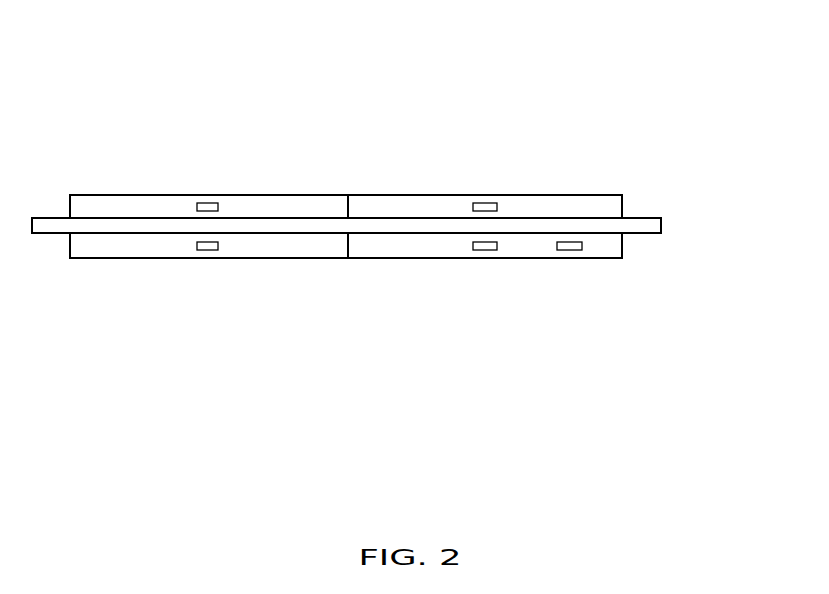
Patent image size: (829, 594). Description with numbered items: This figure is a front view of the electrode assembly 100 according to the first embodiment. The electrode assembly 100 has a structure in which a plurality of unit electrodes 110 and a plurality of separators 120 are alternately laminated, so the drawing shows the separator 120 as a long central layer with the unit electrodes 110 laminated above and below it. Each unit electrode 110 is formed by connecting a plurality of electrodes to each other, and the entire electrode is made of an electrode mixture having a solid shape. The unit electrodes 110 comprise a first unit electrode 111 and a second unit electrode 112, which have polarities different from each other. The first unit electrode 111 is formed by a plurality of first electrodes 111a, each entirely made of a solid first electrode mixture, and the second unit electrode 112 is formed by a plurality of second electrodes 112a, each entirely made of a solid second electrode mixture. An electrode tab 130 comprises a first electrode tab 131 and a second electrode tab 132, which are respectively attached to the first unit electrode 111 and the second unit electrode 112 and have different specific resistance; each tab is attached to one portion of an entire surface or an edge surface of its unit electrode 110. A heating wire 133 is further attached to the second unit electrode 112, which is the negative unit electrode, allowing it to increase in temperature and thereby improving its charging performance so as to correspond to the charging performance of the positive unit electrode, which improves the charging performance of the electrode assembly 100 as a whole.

The electrode assembly 100 is at (125, 112).
The unit electrode 110 is at (440, 223).
The first unit electrode 111 is at (346, 145).
The first electrode 111a is at (355, 120).
The second unit electrode 112 is at (346, 165).
The second electrode 112a is at (338, 246).
The separator 120 is at (45, 227).
The electrode tab 130 is at (347, 305).
The first electrode tab 131 is at (210, 211).
The second electrode tab 132 is at (450, 281).
The heating wire 133 is at (567, 250).